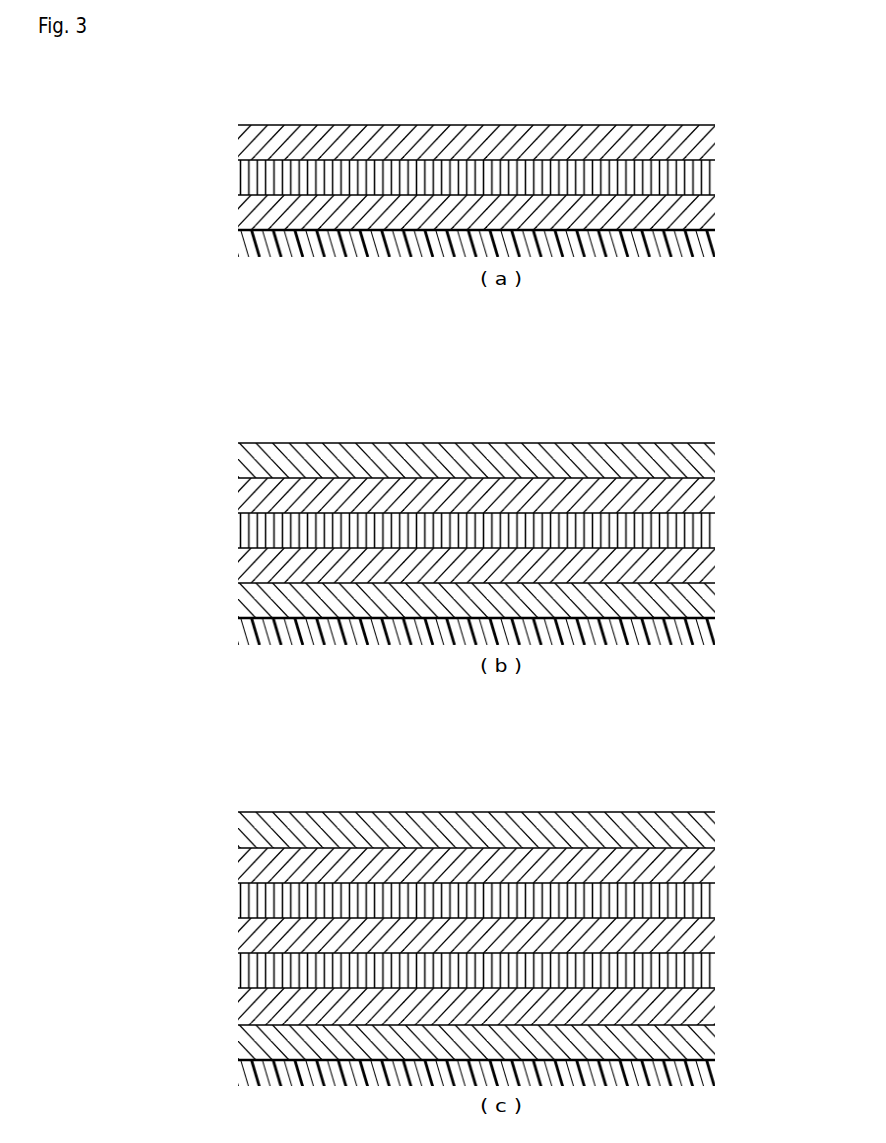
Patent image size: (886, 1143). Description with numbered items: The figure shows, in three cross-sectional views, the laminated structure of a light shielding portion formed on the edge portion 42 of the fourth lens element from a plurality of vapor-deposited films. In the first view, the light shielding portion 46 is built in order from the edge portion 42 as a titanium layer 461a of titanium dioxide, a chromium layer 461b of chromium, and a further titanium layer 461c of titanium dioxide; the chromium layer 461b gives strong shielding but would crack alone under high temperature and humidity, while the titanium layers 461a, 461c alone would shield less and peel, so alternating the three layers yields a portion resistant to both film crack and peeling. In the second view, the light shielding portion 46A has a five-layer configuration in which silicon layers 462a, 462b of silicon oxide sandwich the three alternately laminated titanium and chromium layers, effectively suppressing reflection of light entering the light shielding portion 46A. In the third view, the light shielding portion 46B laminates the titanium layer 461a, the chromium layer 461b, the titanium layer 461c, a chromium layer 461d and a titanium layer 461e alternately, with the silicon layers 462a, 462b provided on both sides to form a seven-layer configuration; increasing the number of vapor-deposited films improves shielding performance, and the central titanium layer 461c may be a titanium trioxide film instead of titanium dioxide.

The edge portion 42 is at (700, 248).
The light shielding portion 46 is at (585, 120).
The light shielding portion 46A is at (585, 438).
The light shielding portion 46B is at (585, 807).
The titanium layer 461a is at (698, 215).
The chromium layer 461b is at (698, 180).
The titanium layer 461c is at (698, 146).
The chromium layer 461d is at (698, 903).
The titanium layer 461e is at (698, 868).
The silicon layer 462a is at (253, 603).
The silicon layer 462b is at (253, 462).